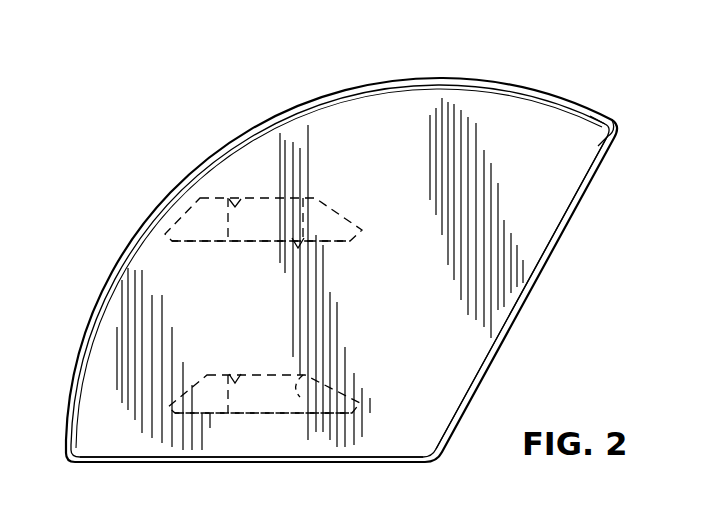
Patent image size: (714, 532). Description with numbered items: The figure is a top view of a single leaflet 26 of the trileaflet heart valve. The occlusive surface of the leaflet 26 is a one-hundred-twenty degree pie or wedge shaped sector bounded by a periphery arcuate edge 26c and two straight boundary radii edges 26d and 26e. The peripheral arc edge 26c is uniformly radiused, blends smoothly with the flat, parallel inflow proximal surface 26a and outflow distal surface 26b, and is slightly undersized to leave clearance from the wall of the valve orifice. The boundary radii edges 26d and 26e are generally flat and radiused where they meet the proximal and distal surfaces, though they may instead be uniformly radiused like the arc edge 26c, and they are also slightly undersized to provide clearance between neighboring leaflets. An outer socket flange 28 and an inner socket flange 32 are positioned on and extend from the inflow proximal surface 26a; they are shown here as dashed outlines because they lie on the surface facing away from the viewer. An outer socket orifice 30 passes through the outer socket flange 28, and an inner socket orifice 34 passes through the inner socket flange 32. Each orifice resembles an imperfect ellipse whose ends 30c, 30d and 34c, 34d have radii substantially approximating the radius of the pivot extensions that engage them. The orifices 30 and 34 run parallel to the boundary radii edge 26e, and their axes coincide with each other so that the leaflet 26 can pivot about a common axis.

The leaflet 26 is at (405, 77).
The inflow proximal surface 26a is at (358, 128).
The outflow distal surface 26b is at (570, 142).
The periphery arcuate edge 26c is at (486, 83).
The boundary radii edge 26d is at (547, 270).
The boundary radii edge 26e is at (328, 465).
The outer socket flange 28 is at (316, 196).
The outer socket orifice 30 is at (263, 238).
The end of outer socket orifice 30c is at (298, 248).
The end of outer socket orifice 30d is at (237, 196).
The inner socket flange 32 is at (342, 398).
The inner socket orifice 34 is at (257, 395).
The end of inner socket orifice 34c is at (303, 373).
The end of inner socket orifice 34d is at (238, 373).